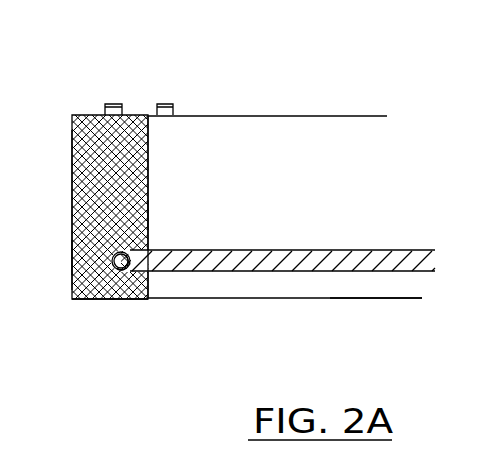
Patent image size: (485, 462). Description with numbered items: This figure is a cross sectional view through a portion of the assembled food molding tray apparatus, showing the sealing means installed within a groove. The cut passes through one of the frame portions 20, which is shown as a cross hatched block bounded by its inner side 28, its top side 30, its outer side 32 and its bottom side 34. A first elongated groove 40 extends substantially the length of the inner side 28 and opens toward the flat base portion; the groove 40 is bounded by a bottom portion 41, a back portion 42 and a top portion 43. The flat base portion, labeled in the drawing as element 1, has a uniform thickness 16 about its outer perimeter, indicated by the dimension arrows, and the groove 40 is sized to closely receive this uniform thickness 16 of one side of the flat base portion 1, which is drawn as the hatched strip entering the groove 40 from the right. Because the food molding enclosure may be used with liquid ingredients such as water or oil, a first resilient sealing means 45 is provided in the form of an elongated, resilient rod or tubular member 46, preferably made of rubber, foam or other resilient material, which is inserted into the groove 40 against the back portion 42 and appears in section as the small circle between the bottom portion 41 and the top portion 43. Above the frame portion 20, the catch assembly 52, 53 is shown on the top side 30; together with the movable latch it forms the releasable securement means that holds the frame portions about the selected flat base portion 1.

The frame portion 20 is at (88, 100).
The catch assembly 52 is at (113, 103).
The catch assembly 53 is at (173, 103).
The top side 30 is at (273, 115).
The outer side 32 is at (72, 152).
The inner side 28 is at (148, 165).
The top portion 43 is at (148, 213).
The first elongated groove 40 is at (128, 252).
The elongated resilient rod or tubular member 46 is at (111, 254).
The back portion 42 is at (111, 260).
The strip / blade (1,14) 1 is at (287, 250).
The uniform thickness 16 is at (412, 317).
The bottom side 34 is at (107, 300).
The first resilient sealing means 45 is at (122, 270).
The bottom portion 41 is at (128, 267).